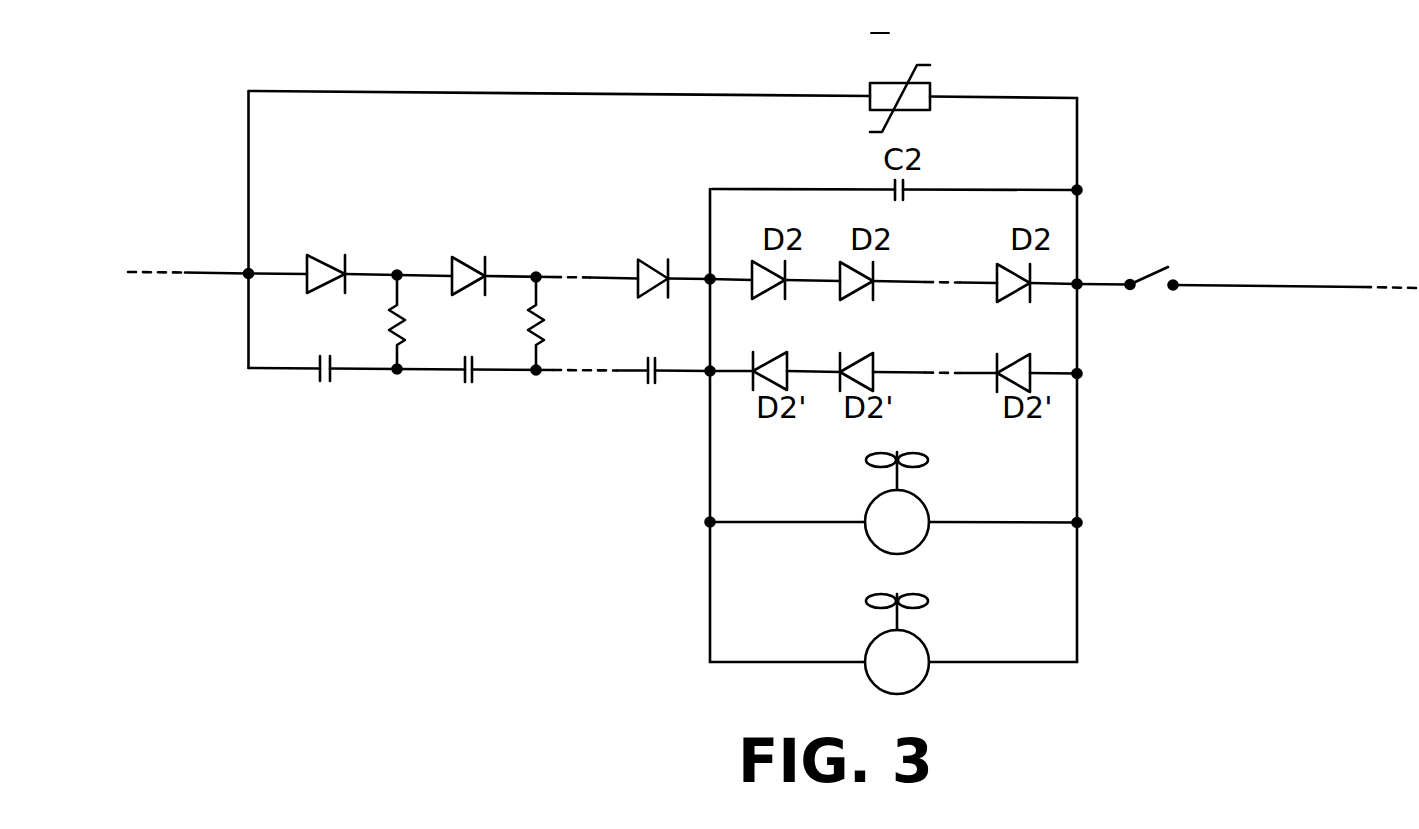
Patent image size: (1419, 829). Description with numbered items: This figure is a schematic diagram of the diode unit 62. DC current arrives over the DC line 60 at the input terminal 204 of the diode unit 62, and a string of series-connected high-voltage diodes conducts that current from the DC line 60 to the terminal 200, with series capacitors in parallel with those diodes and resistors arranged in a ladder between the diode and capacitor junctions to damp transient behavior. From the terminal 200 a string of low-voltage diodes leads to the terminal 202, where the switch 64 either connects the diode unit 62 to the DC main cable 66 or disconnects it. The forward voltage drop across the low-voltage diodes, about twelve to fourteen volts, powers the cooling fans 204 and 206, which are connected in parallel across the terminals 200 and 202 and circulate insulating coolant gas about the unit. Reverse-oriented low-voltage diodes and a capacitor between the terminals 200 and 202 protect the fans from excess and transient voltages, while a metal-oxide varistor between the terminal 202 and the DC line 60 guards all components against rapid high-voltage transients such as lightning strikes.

The DC line 60 is at (208, 270).
The diode unit 62 is at (558, 152).
The switch 64 is at (1151, 271).
The DC main cable 66 is at (1264, 284).
The terminal 200 is at (710, 452).
The terminal 202 is at (1077, 452).
The cooling fan 204 is at (928, 499).
The cooling fan 206 is at (928, 641).